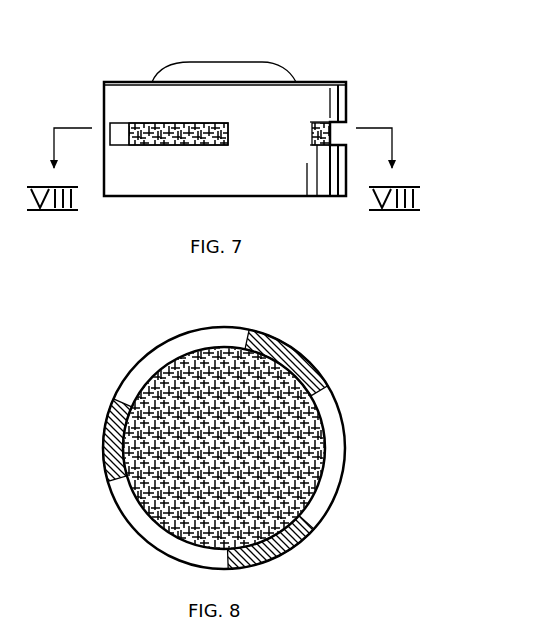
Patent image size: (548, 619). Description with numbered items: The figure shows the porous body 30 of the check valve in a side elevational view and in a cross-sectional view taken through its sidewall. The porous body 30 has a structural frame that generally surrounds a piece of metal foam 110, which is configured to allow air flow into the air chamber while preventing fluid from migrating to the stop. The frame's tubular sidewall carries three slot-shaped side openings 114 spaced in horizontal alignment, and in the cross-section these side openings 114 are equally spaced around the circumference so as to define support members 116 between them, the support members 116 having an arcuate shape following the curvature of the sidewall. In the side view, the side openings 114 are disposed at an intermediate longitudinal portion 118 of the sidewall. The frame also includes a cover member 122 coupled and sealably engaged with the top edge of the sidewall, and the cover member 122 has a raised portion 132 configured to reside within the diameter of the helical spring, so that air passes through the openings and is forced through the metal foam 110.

In FIG. 7, the porous body 30 is at (89, 51).
In FIG. 8, the porous body 30 is at (104, 358).
In FIG. 7, the metal foam 110 is at (139, 128).
In FIG. 8, the metal foam 110 is at (305, 428).
In FIG. 7, the side openings 114 is at (312, 131).
In FIG. 8, the side openings 114 is at (185, 343).
In FIG. 8, the support members 116 is at (293, 362).
In FIG. 7, the intermediate longitudinal portion 118 is at (352, 120).
In FIG. 7, the cover member 122 is at (314, 83).
In FIG. 7, the raised portion 132 is at (170, 71).